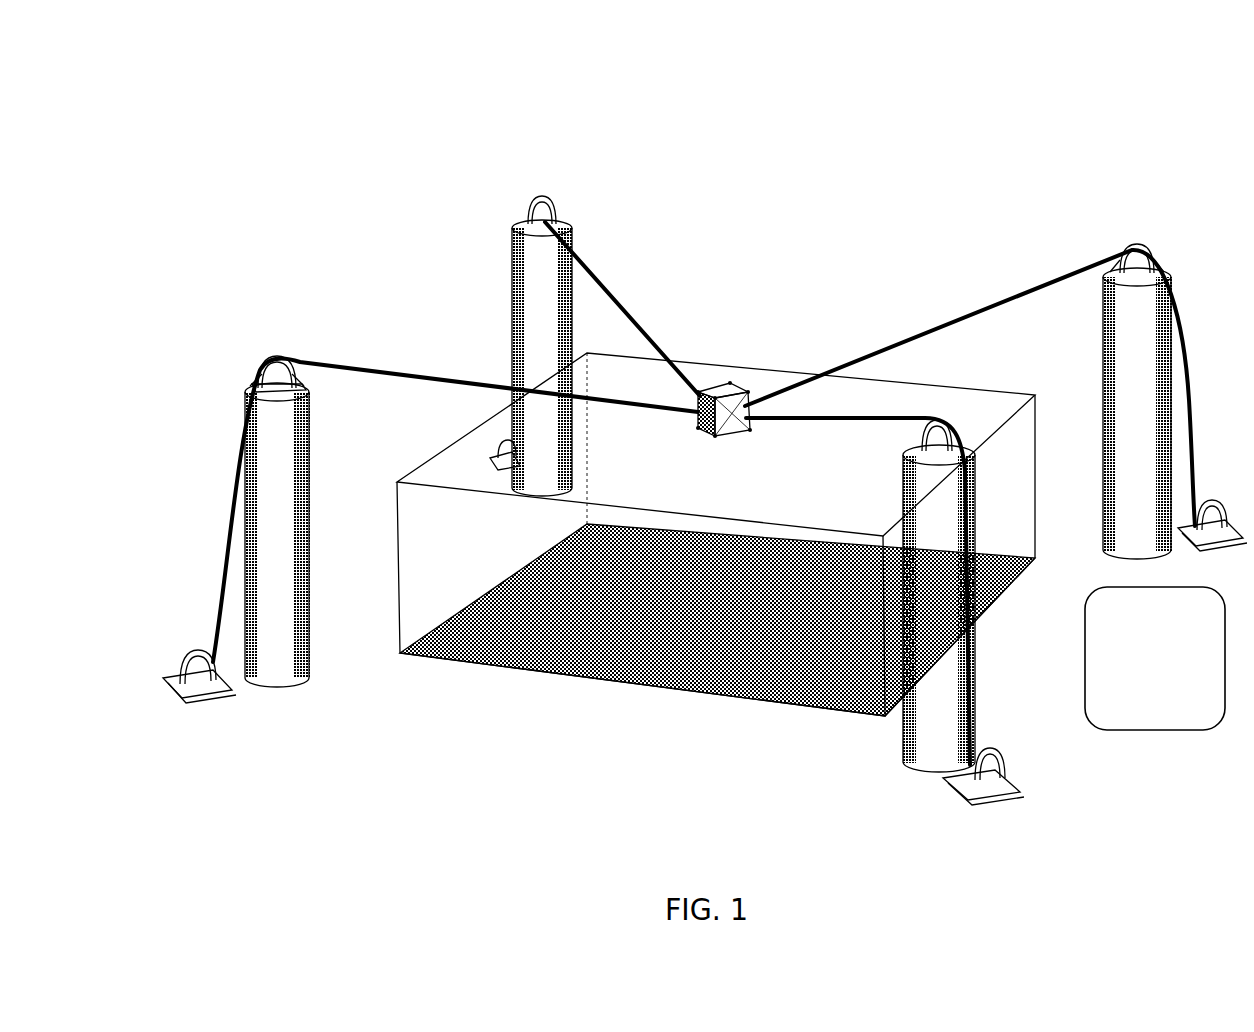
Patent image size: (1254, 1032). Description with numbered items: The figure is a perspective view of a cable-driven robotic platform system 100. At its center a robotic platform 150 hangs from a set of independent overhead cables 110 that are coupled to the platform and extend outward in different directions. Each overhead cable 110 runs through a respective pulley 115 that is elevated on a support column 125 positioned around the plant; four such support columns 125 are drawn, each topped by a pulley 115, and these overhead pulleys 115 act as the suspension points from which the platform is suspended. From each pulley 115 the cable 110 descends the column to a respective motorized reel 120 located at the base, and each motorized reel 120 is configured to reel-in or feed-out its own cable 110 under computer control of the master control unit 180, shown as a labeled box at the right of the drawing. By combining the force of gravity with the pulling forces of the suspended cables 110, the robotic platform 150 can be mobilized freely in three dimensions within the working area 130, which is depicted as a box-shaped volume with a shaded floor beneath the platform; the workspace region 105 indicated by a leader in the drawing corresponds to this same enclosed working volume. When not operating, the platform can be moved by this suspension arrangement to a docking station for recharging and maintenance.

The cable-driven robotic platform system 100 is at (251, 105).
The workspace 105 is at (285, 325).
The overhead cables 110 is at (420, 376).
The pulleys 115 is at (270, 356).
The motorized reels 120 is at (168, 682).
The support columns 125 is at (510, 291).
The working area 130 is at (447, 466).
The robotic platform 150 is at (698, 430).
The master control unit 180 is at (1155, 658).